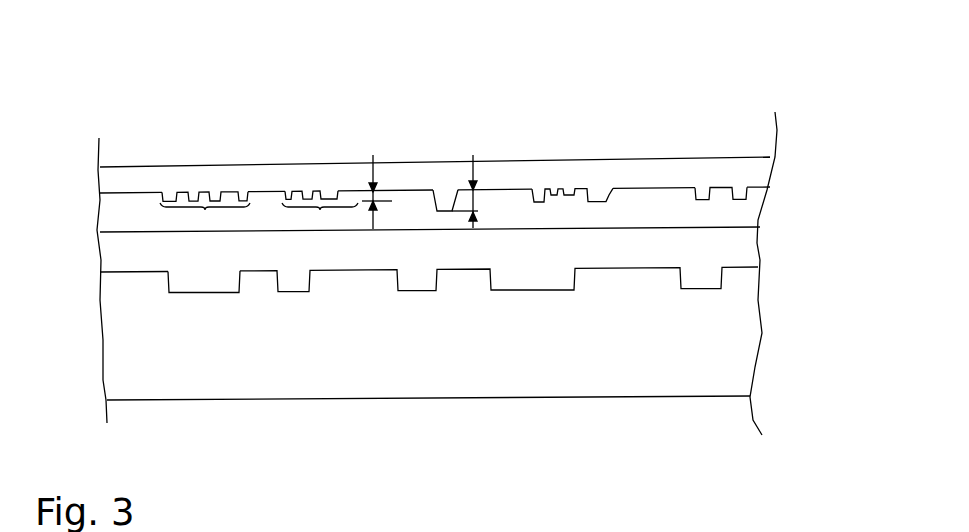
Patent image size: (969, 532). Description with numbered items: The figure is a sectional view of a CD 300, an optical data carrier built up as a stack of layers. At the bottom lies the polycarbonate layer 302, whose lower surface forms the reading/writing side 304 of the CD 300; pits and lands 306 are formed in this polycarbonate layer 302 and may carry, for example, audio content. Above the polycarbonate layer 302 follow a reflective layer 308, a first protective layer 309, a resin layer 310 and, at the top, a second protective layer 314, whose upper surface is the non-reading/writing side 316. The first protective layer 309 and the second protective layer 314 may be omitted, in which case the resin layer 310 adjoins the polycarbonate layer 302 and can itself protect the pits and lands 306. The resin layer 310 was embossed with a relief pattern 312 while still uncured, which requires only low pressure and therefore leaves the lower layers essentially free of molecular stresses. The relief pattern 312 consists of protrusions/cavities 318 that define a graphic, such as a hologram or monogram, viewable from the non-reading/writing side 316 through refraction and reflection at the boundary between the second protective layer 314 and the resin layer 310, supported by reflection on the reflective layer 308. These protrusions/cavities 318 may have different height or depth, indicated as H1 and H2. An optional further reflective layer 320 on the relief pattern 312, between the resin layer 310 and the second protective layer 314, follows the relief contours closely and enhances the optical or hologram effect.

The CD 300 is at (772, 92).
The polycarbonate layer 302 is at (477, 370).
The reading/writing side 304 is at (300, 400).
The pits and lands 306 is at (210, 297).
The reflective layer 308 is at (664, 268).
The first protective layer 309 is at (120, 252).
The resin layer 310 is at (752, 210).
The relief pattern 312 is at (209, 169).
The second protective layer 314 is at (742, 177).
The non-reading/writing side 316 is at (255, 166).
The protrusions/cavities 318 is at (259, 218).
The further reflective layer 320 is at (138, 183).
The height/depth H1 is at (372, 201).
The height/depth H2 is at (475, 205).